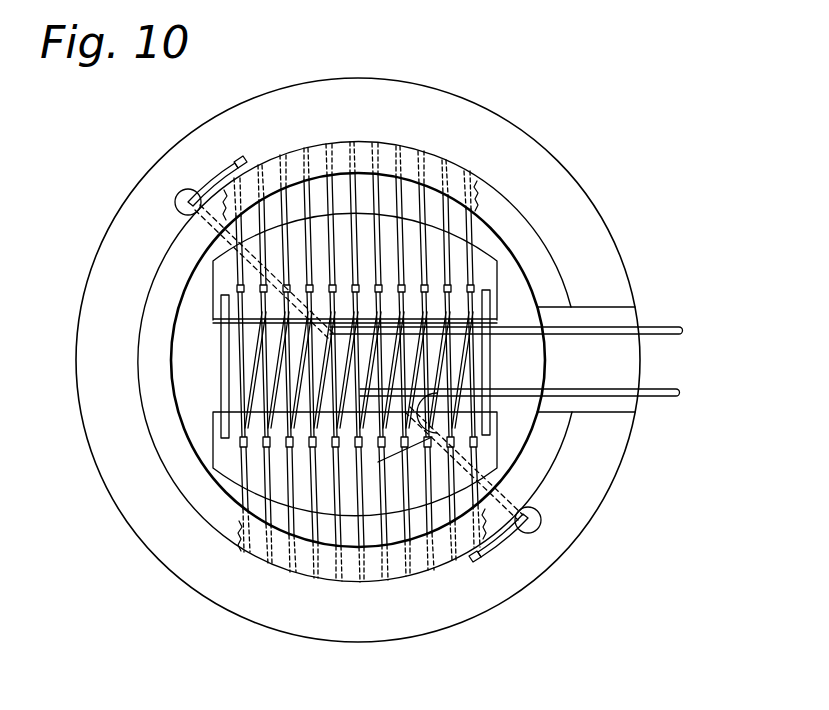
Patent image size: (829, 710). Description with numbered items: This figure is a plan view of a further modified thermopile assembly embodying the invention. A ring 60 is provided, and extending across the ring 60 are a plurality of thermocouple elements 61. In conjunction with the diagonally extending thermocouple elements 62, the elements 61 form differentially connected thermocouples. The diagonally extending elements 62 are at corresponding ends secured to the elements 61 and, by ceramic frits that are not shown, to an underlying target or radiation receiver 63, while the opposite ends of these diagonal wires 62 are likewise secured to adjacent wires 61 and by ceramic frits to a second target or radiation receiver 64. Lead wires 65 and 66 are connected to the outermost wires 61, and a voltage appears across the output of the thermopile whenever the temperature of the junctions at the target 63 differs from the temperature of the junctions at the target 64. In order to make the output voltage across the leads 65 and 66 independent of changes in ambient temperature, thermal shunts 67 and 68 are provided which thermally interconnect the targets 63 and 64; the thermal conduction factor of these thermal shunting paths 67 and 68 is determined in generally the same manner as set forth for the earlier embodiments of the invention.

The ring 60 is at (532, 145).
The thermocouple elements 61 is at (372, 193).
The diagonally extending thermocouple elements 62 is at (460, 352).
The target or radiation receiver 63 is at (483, 270).
The second target or radiation receiver 64 is at (490, 455).
The lead wire 65 is at (650, 328).
The lead wire 66 is at (663, 387).
The thermal shunt 67 is at (227, 337).
The thermal shunt 68 is at (488, 323).